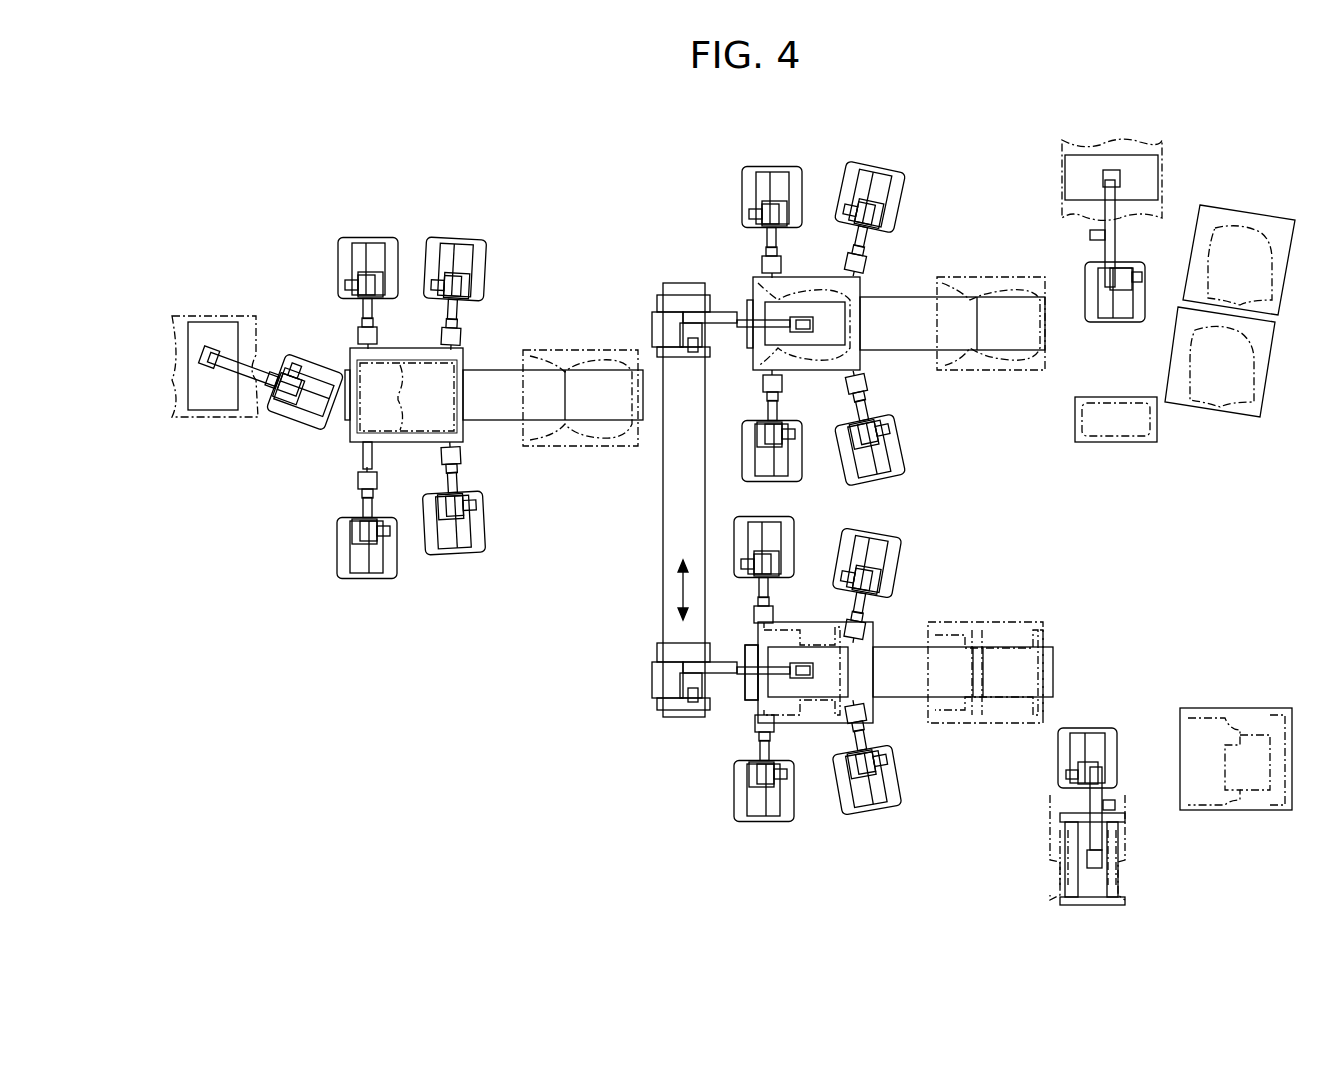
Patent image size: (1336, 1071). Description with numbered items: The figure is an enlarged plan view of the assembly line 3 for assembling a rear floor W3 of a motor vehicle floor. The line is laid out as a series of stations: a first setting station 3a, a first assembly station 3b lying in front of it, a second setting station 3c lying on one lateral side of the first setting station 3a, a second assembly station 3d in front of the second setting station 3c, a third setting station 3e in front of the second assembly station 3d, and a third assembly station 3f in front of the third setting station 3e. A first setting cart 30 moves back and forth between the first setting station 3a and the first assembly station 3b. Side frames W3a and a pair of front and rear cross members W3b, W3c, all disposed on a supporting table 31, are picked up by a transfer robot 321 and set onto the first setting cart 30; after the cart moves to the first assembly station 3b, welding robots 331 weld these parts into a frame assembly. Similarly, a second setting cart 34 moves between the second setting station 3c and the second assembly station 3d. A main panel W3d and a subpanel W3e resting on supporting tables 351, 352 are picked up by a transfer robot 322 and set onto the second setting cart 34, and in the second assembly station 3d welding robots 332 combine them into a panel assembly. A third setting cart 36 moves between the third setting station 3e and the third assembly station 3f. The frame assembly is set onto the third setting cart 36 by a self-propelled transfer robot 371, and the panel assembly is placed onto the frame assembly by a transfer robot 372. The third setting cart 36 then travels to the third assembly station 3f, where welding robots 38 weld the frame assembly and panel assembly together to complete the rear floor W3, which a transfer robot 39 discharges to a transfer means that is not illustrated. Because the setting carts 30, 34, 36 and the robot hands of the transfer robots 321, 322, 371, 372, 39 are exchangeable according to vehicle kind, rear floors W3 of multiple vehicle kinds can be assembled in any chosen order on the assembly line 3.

The assembly line 3 is at (478, 686).
The first setting station 3a is at (976, 730).
The first assembly station 3b is at (731, 712).
The second setting station 3c is at (989, 274).
The second assembly station 3d is at (738, 268).
The third setting station 3e is at (571, 340).
The third assembly station 3f is at (331, 343).
The first setting cart 30 is at (803, 722).
The supporting table 31 is at (1212, 712).
The transfer robot 321 is at (1095, 745).
The transfer robot 322 is at (1109, 316).
The welding robots 331 is at (784, 532).
The welding robots 332 is at (757, 178).
The second setting cart 34 is at (803, 372).
The supporting table 351 is at (1222, 214).
The supporting table 352 is at (1075, 425).
The third setting cart 36 is at (390, 450).
The self-propelled transfer robot 371 is at (655, 683).
The transfer robot 372 is at (663, 322).
The welding robots 38 is at (380, 243).
The transfer robot 39 is at (294, 415).
The rear floor W3 is at (201, 312).
The side frames W3a is at (956, 636).
The front cross member W3b is at (990, 660).
The rear cross member W3c is at (1050, 660).
The main panel W3d is at (1012, 285).
The subpanel W3e is at (950, 285).